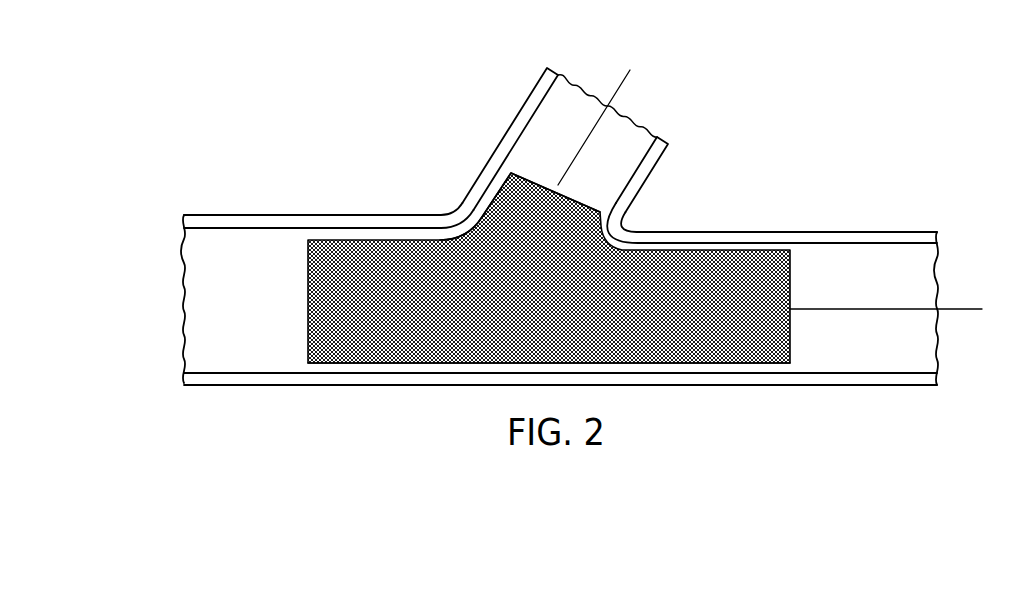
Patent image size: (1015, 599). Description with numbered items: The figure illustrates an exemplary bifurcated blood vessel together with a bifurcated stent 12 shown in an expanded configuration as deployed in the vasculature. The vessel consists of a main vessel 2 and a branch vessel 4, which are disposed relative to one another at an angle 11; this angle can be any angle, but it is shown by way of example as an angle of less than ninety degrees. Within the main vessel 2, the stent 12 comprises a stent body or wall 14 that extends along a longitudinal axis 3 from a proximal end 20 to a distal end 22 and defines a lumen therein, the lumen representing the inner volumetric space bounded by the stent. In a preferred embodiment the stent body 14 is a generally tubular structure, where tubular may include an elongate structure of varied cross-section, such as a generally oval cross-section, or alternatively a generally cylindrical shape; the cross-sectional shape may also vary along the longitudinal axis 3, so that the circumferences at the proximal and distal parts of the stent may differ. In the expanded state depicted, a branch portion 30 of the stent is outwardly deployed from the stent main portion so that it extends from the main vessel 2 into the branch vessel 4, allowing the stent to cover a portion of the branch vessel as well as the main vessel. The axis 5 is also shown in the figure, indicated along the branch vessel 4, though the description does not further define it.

The main vessel 2 is at (214, 387).
The longitudinal axis 3 is at (966, 309).
The branch vessel 4 is at (514, 123).
The axis of branch tube 5 is at (594, 114).
The angle 11 is at (670, 155).
The stent 12 is at (707, 373).
The stent body 14 is at (400, 351).
The proximal end 20 is at (288, 258).
The distal end 22 is at (819, 358).
The branch portion 30 is at (496, 200).